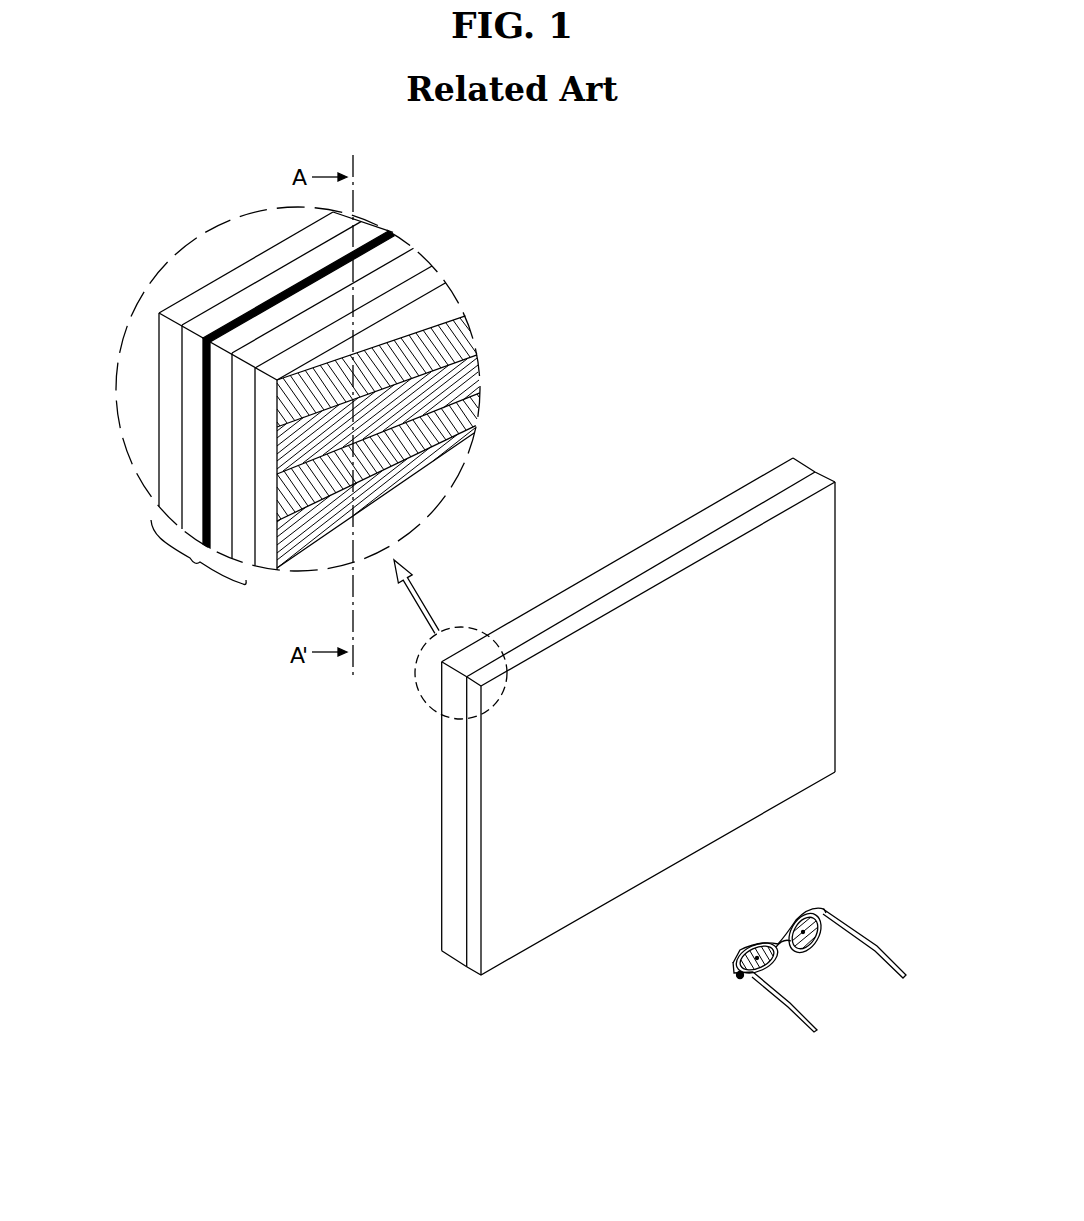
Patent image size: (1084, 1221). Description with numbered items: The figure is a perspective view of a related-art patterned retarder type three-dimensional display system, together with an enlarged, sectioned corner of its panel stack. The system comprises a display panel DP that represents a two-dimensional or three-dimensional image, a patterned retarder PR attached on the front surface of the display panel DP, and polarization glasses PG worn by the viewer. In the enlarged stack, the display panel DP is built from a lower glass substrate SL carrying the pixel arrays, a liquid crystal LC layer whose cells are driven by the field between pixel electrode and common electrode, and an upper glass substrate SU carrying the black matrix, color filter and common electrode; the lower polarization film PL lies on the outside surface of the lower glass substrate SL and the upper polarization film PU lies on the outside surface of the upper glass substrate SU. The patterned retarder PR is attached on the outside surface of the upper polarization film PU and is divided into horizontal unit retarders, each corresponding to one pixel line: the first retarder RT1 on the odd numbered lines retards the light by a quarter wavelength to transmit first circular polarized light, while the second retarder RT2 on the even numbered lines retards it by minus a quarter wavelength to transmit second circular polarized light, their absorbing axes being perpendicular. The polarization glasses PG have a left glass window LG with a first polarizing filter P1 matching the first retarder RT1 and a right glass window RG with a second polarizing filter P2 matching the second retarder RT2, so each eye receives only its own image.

The lower polarization film PL is at (197, 305).
The lower glass substrate SL is at (223, 322).
The liquid crystal LC is at (250, 307).
The upper glass substrate SU is at (225, 541).
The upper polarization film PU is at (248, 552).
The display panel DP is at (427, 991).
The patterned retarder PR is at (265, 561).
The first retarder RT1 is at (455, 302).
The second retarder RT2 is at (473, 340).
The polarization glasses PG is at (773, 999).
The left glass window LG is at (772, 967).
The right glass window RG is at (822, 941).
The first polarizing filter P1 is at (757, 958).
The second polarizing filter P2 is at (803, 931).